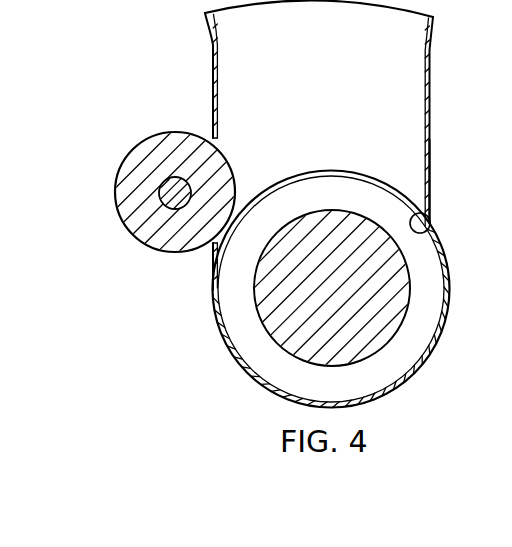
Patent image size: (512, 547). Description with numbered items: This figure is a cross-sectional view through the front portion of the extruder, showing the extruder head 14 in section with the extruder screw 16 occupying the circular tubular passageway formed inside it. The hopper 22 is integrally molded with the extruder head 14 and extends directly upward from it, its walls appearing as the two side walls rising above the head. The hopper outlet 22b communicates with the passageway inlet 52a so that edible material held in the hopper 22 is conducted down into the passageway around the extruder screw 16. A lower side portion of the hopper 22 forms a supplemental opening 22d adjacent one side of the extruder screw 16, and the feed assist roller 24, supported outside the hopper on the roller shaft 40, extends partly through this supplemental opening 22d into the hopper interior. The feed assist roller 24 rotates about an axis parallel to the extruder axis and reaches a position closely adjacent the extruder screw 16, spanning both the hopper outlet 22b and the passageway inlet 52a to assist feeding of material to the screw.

The extruder head 14 is at (222, 347).
The extruder screw 16 is at (258, 300).
The hopper 22 is at (211, 43).
The hopper outlet 22b is at (413, 186).
The supplemental opening 22d is at (215, 143).
The feed assist roller 24 is at (136, 154).
The roller shaft 40 is at (160, 203).
The passageway inlet 52a is at (430, 228).